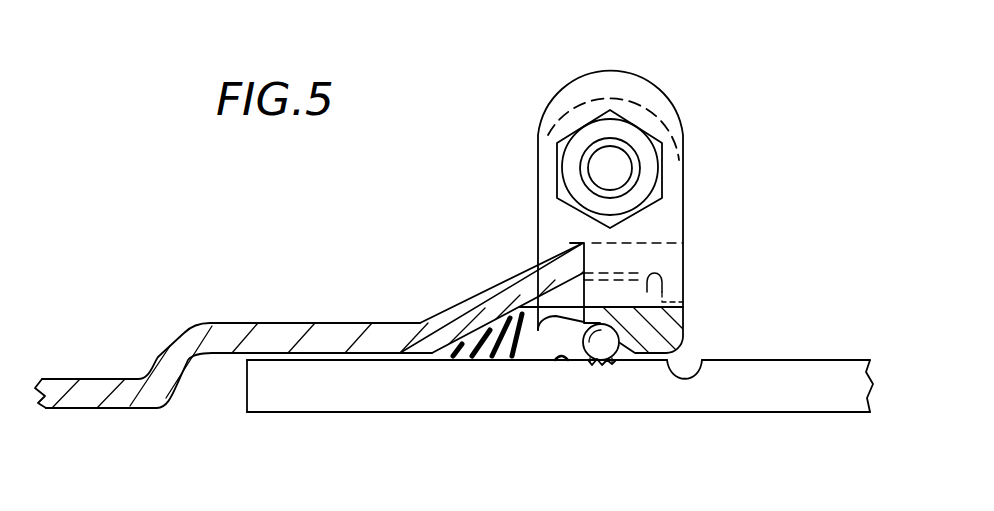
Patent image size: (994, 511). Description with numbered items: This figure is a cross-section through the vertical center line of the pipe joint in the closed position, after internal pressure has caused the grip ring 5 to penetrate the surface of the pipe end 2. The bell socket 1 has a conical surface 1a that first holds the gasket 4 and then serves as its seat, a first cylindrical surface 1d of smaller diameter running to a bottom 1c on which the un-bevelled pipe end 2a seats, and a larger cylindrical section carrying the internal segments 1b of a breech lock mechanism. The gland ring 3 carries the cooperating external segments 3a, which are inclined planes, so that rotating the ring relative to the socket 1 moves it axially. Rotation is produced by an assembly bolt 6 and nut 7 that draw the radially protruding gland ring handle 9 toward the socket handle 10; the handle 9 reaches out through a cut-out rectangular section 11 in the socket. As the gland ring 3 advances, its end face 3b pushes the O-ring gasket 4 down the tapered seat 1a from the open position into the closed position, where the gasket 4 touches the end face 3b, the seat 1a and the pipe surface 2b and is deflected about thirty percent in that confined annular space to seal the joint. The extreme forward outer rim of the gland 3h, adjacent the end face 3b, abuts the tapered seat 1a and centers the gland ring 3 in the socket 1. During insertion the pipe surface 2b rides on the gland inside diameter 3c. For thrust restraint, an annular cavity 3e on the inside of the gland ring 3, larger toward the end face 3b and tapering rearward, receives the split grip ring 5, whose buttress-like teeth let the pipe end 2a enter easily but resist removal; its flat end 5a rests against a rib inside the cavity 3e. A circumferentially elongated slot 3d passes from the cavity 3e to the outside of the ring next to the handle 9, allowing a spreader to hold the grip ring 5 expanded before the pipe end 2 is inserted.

The bell socket 1 is at (233, 333).
The conical surface 1a is at (512, 300).
The internal segments of breech lock mechanism 1b is at (683, 283).
The bottom of socket 1c is at (180, 395).
The first cylindrical surface 1d is at (330, 352).
The pipe end 2 is at (841, 378).
The un-bevelled pipe end 2a is at (247, 390).
The pipe surface 2b is at (558, 355).
The gland ring 3 is at (683, 318).
The external segments of breech lock mechanism 3a is at (695, 262).
The gland ring end face 3b is at (500, 358).
The gland inside diameter 3c is at (505, 318).
The slot 3d is at (548, 298).
The annular cavity 3e is at (578, 355).
The extreme forward outer rim of the gland 3h is at (500, 308).
The gasket 4 is at (440, 312).
The grip ring 5 is at (607, 345).
The flat end of split grip ring 5a is at (603, 357).
The assembly bolt 6 is at (596, 169).
The assembly bolt nut 7 is at (574, 147).
The gland ring handle 9 is at (572, 75).
The socket handle 10 is at (700, 122).
The cut-out rectangular section 11 is at (578, 244).